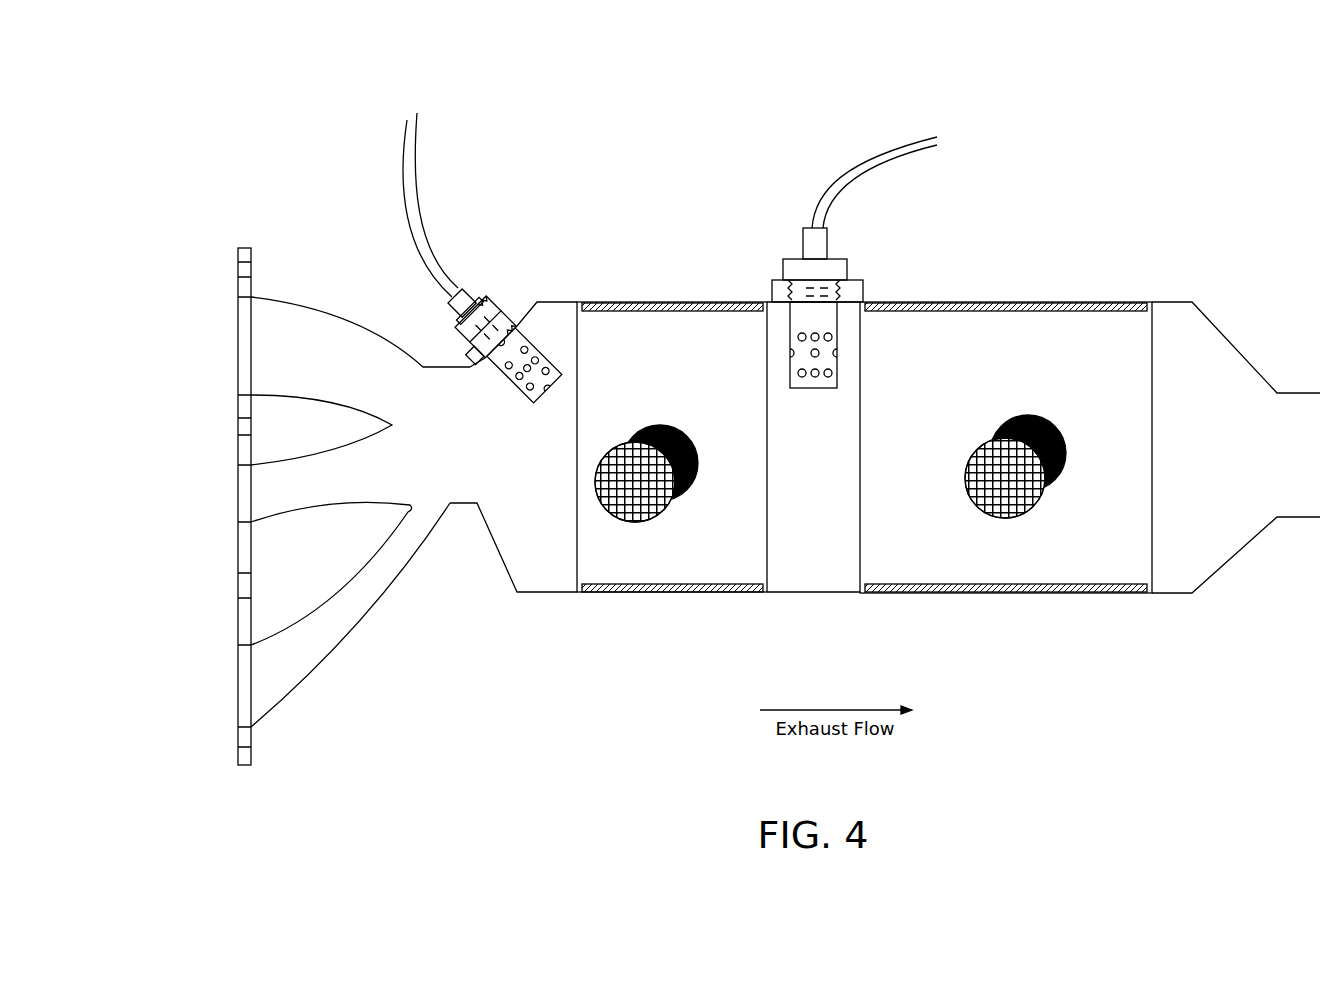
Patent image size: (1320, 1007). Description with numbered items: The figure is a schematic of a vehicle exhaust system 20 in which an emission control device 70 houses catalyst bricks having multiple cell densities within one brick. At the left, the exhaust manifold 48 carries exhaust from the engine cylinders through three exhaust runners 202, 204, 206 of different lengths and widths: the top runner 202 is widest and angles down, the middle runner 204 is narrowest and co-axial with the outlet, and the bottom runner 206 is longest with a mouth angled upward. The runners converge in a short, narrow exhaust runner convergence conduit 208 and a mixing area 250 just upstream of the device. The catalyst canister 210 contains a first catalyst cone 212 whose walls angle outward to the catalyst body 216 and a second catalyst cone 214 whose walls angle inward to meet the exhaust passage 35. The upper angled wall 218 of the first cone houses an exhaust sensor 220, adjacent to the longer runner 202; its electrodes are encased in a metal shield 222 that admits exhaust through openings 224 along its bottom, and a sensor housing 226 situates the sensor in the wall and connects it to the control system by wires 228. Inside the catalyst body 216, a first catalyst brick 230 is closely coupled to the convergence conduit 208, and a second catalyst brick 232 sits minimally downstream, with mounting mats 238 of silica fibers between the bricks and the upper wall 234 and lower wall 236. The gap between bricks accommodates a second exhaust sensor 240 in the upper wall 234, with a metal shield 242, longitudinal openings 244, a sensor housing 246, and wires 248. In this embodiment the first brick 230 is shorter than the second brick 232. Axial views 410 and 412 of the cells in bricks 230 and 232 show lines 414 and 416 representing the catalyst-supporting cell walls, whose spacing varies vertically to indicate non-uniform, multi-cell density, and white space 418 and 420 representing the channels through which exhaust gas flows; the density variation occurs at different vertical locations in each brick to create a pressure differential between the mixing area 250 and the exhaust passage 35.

The vehicle exhaust system 20 is at (238, 92).
The exhaust manifold 48 is at (172, 431).
The exhaust runner 202 is at (360, 381).
The middle exhaust runner 204 is at (331, 562).
The bottom exhaust runner 206 is at (350, 615).
The exhaust runner convergence conduit 208 is at (463, 485).
The first catalyst cone 212 is at (508, 538).
The upper angled wall 218 is at (525, 300).
The exhaust sensor 220 is at (482, 298).
The metal shield 222 is at (513, 343).
The openings 224 is at (530, 363).
The sensor housing 226 is at (467, 347).
The wires 228 is at (413, 237).
The first catalyst brick 230 is at (672, 447).
The second catalyst brick 232 is at (1006, 447).
The mounting mats 238 is at (1025, 308).
The catalyst canister 210 is at (813, 447).
The catalyst body 216 is at (815, 595).
The exhaust sensor 240 is at (803, 258).
The metal shield 242 is at (807, 325).
The openings 244 is at (800, 372).
The sensor housing 246 is at (852, 288).
The wires 248 is at (888, 158).
The upper wall 234 is at (1143, 302).
The lower wall 236 is at (1135, 593).
The exhaust passage 35 is at (1292, 422).
The second catalyst cone 214 is at (1210, 537).
The emission control device 70 is at (1054, 168).
The mixing area 250 is at (520, 605).
The axial view 410 is at (645, 542).
The axial view 412 is at (1015, 538).
The lines 414 is at (665, 516).
The lines 416 is at (1049, 505).
The white space 418 is at (671, 476).
The white space 420 is at (957, 463).